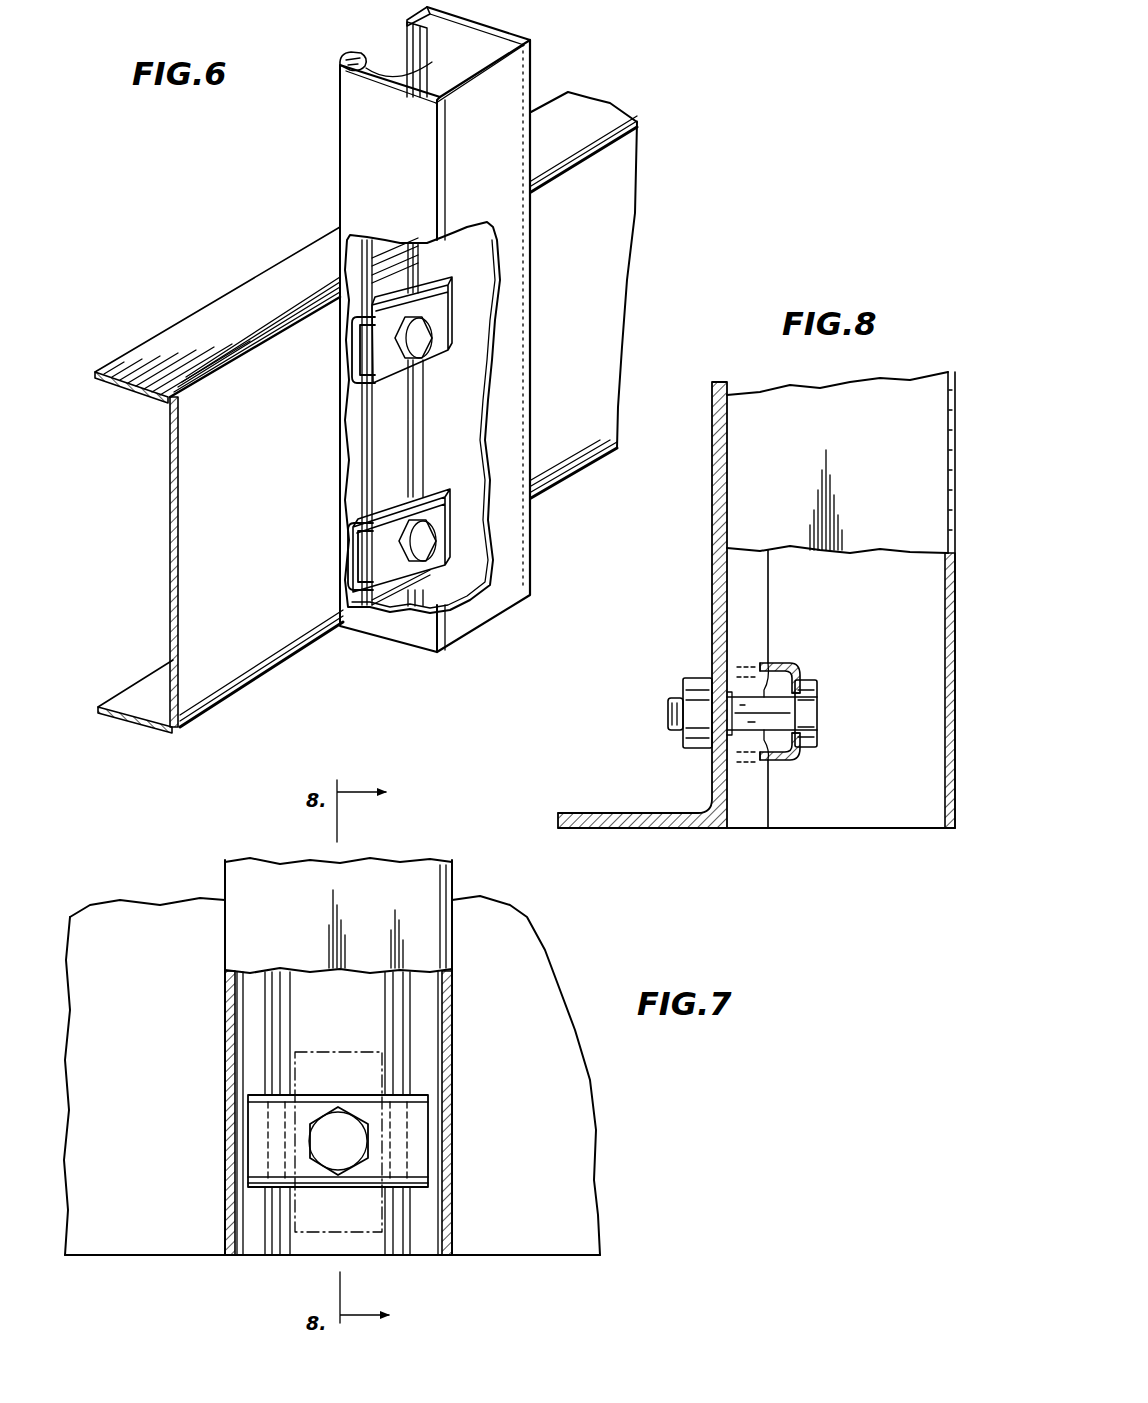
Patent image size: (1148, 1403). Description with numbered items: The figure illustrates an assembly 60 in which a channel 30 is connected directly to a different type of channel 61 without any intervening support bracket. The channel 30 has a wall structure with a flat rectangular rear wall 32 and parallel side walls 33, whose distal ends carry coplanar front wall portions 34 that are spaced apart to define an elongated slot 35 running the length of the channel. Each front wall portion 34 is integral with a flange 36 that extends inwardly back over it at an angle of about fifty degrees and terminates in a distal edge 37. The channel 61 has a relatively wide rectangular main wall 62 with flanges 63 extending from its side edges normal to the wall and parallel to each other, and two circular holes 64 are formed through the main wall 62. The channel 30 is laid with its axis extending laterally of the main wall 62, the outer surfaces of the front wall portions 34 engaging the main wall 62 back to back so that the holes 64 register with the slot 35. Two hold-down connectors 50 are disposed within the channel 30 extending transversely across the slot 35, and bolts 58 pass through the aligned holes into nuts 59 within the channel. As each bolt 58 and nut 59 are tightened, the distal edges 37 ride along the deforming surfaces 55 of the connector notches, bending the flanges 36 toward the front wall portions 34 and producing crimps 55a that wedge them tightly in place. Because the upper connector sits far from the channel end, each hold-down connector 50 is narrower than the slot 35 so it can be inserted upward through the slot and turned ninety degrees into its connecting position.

In FIG. 6, the channel 30 is at (334, 154).
In FIG. 8, the channel 30 is at (920, 365).
In FIG. 7, the channel 30 is at (430, 852).
In FIG. 6, the rear wall 32 is at (497, 602).
In FIG. 8, the rear wall 32 is at (948, 812).
In FIG. 7, the rear wall 32 is at (289, 866).
In FIG. 6, the side walls 33 is at (400, 630).
In FIG. 8, the side walls 33 is at (806, 410).
In FIG. 7, the side walls 33 is at (233, 1221).
In FIG. 6, the front wall portions 34 is at (415, 20).
In FIG. 7, the front wall portions 34 is at (250, 1006).
In FIG. 6, the slot 35 is at (391, 62).
In FIG. 7, the slot 35 is at (348, 975).
In FIG. 6, the flange 36 is at (420, 46).
In FIG. 8, the flange 36 is at (770, 586).
In FIG. 7, the flange 36 is at (393, 1012).
In FIG. 6, the distal edge 37 is at (362, 472).
In FIG. 8, the distal edge 37 is at (773, 626).
In FIG. 7, the distal edge 37 is at (265, 967).
In FIG. 6, the hold-down connector 50 is at (448, 290).
In FIG. 8, the hold-down connector 50 is at (803, 663).
In FIG. 7, the hold-down connector 50 is at (356, 1088).
In FIG. 8, the deforming surfaces 55 is at (790, 753).
In FIG. 8, the crimps 55a is at (776, 765).
In FIG. 7, the crimps 55a is at (262, 1084).
In FIG. 6, the bolt 58 is at (424, 342).
In FIG. 8, the bolt 58 is at (668, 712).
In FIG. 7, the bolt 58 is at (338, 1160).
In FIG. 8, the nut 59 is at (697, 679).
In FIG. 6, the assembly 60 is at (217, 150).
In FIG. 6, the channel 61 is at (652, 204).
In FIG. 6, the main wall 62 is at (186, 506).
In FIG. 8, the main wall 62 is at (712, 478).
In FIG. 7, the main wall 62 is at (540, 937).
In FIG. 6, the flanges 63 is at (148, 340).
In FIG. 8, the flanges 63 is at (591, 813).
In FIG. 8, the circular holes 64 is at (716, 742).